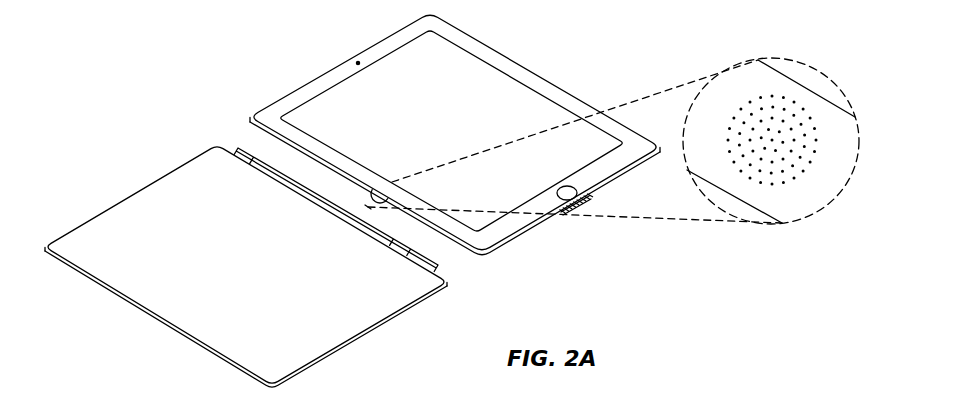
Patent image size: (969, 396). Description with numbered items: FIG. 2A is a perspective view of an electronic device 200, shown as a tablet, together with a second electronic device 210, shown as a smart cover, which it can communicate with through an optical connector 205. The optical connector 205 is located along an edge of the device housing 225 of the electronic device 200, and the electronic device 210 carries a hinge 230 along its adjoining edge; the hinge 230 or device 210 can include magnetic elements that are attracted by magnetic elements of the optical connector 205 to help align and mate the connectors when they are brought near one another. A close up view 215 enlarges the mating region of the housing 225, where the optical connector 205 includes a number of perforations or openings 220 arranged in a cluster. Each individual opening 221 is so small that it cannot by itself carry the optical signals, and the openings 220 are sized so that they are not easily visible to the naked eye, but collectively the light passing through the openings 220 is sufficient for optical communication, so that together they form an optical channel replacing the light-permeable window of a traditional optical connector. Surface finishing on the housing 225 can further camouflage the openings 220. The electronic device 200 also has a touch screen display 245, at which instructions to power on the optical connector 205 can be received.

The electronic device 200 is at (487, 141).
The optical connector 205 is at (377, 172).
The electronic device 210 is at (246, 246).
The close up view 215 is at (772, 156).
The openings 220 is at (750, 206).
The opening 221 is at (758, 92).
The device housing 225 is at (550, 80).
The hinge 230 is at (245, 150).
The touch screen display 245 is at (453, 85).